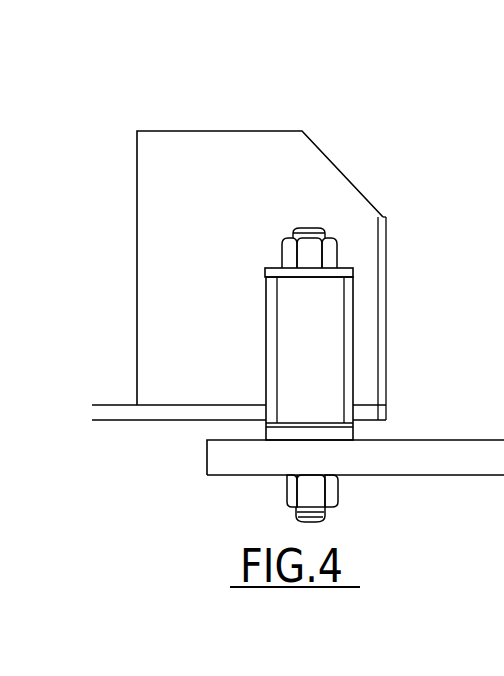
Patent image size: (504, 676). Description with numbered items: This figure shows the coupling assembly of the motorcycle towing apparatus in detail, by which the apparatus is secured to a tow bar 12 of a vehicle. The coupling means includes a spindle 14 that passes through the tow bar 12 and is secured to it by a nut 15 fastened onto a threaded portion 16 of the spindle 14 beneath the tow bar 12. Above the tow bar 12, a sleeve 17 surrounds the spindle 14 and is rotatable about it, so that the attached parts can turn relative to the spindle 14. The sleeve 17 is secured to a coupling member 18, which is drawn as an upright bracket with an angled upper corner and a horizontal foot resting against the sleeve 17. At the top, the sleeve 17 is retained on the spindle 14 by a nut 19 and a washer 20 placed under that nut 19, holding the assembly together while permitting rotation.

The tow bar 12 is at (435, 452).
The spindle 14 is at (325, 360).
The nut 15 is at (338, 490).
The threaded portion 16 is at (326, 514).
The sleeve 17 is at (353, 303).
The coupling member 18 is at (194, 155).
The nut 19 is at (306, 251).
The washer 20 is at (352, 268).